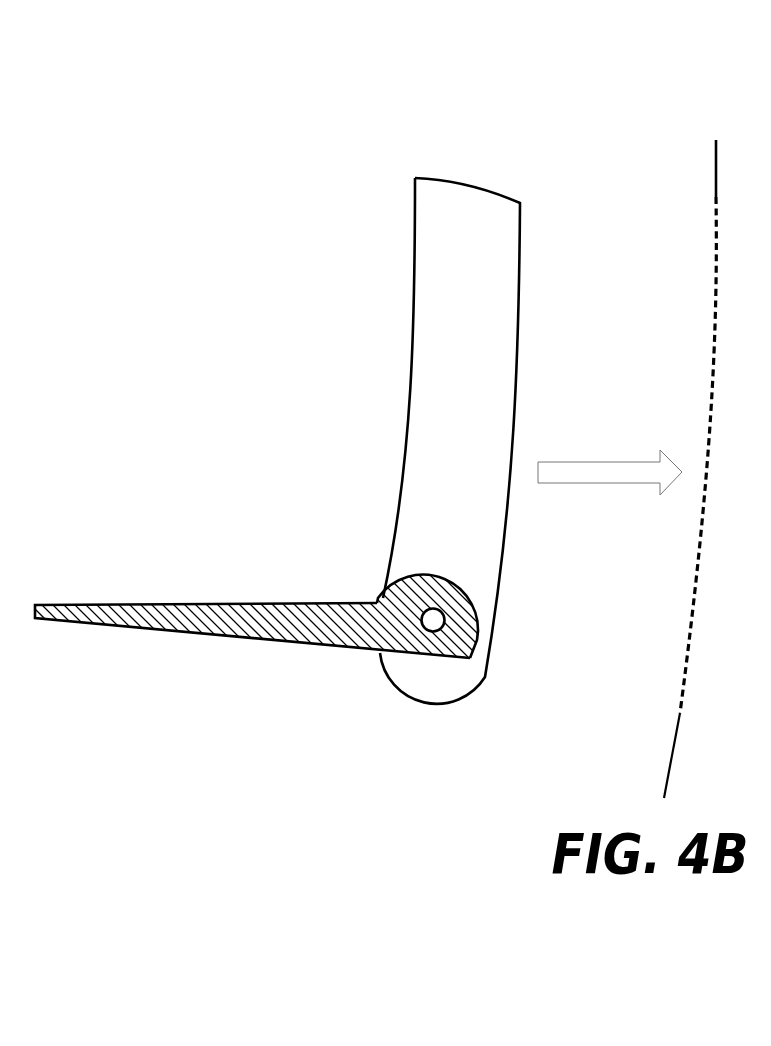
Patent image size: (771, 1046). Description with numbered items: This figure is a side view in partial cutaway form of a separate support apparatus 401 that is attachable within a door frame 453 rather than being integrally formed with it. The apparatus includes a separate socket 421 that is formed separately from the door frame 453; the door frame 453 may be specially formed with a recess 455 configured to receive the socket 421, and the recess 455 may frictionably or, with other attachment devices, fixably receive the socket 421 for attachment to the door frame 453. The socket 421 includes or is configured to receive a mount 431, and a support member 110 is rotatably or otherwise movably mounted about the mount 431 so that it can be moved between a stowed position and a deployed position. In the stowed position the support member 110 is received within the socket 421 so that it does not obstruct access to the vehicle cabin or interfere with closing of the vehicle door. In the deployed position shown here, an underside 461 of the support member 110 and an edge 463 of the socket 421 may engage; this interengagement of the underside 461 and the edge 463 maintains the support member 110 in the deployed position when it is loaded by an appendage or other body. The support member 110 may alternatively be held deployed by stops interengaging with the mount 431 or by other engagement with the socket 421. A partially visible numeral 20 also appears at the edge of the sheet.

The device 20 is at (8, 166).
The separate support apparatus 401 is at (343, 169).
The separate socket 421 is at (520, 287).
The mount 431 is at (444, 621).
The support member 110 is at (157, 605).
The door frame 453 is at (715, 172).
The recess 455 is at (708, 420).
The underside 461 is at (337, 651).
The edge 463 is at (373, 658).